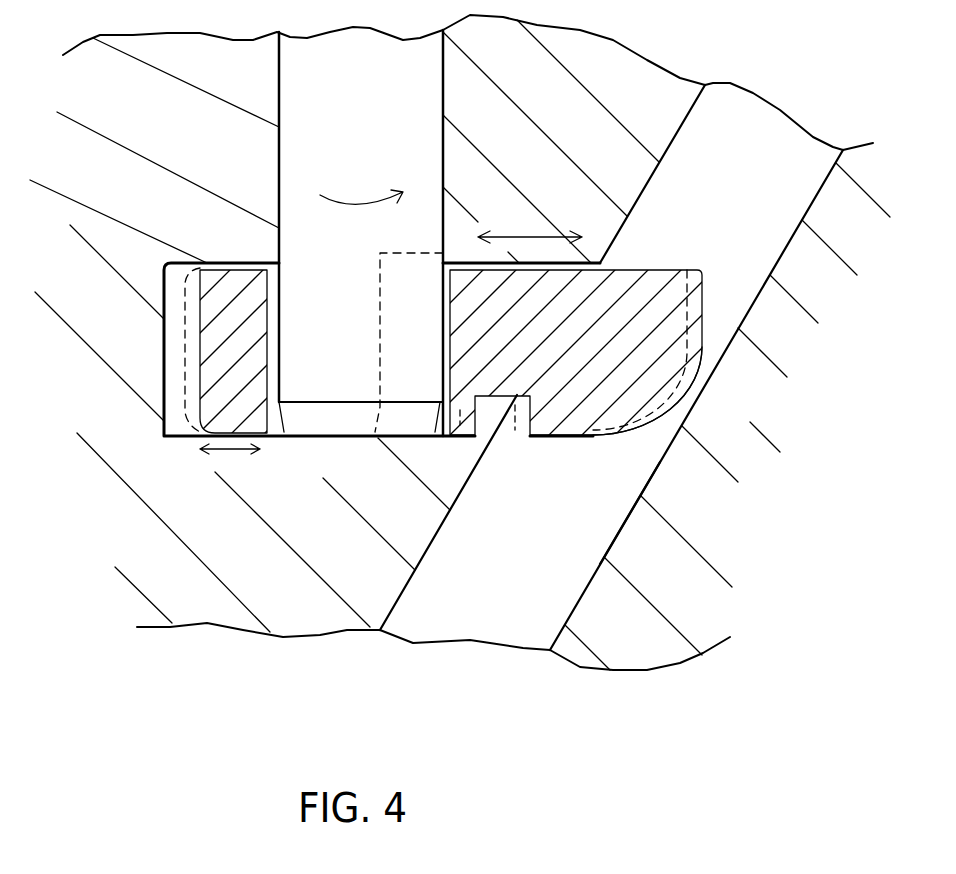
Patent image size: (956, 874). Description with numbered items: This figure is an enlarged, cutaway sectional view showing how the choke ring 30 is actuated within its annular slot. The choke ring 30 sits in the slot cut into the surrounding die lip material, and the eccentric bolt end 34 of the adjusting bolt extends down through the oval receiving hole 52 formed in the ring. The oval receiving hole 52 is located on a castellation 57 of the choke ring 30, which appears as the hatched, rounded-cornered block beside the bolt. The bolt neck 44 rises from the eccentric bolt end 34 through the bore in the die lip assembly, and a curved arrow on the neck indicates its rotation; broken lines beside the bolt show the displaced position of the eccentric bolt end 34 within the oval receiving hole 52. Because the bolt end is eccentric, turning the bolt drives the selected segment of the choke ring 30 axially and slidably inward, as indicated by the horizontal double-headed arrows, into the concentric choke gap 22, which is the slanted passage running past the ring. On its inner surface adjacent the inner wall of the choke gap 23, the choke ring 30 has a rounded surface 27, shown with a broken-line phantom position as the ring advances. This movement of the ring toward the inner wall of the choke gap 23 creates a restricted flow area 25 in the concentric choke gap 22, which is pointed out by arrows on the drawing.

The concentric choke gap 22 is at (740, 197).
The inner wall of the choke gap 23 is at (631, 534).
The restricted flow area 25 is at (694, 398).
The rounded surface 27 is at (640, 364).
The choke ring 30 is at (581, 331).
The eccentric bolt end 34 is at (350, 425).
The bolt neck 44 is at (366, 158).
The oval receiving hole 52 is at (445, 363).
The castellation 57 is at (248, 363).